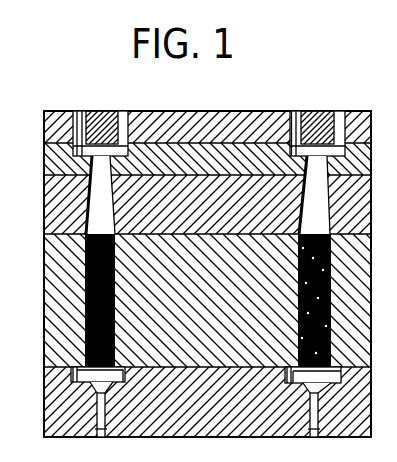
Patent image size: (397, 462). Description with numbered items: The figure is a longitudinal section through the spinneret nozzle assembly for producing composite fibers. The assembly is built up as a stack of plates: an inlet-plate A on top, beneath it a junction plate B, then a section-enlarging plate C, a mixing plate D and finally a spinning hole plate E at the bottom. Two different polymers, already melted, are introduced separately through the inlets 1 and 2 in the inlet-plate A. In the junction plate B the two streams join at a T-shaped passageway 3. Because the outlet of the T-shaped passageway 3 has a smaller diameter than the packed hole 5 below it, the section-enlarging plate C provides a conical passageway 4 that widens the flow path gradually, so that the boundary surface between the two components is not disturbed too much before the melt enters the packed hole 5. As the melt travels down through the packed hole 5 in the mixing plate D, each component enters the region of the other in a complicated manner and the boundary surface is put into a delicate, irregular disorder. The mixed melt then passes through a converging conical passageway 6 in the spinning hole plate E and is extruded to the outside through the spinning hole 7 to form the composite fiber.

The inlet 1 is at (286, 106).
The inlet 2 is at (329, 110).
The T-shaped passageway 3 is at (296, 159).
The conical passageway 4 is at (296, 201).
The packed hole 5 is at (291, 283).
The conical passageway 6 is at (316, 376).
The spinning hole 7 is at (302, 427).
The inlet-plate A is at (363, 123).
The junction plate B is at (363, 157).
The section-enlarging plate C is at (363, 200).
The mixing plate D is at (363, 292).
The spinning hole plate E is at (363, 397).